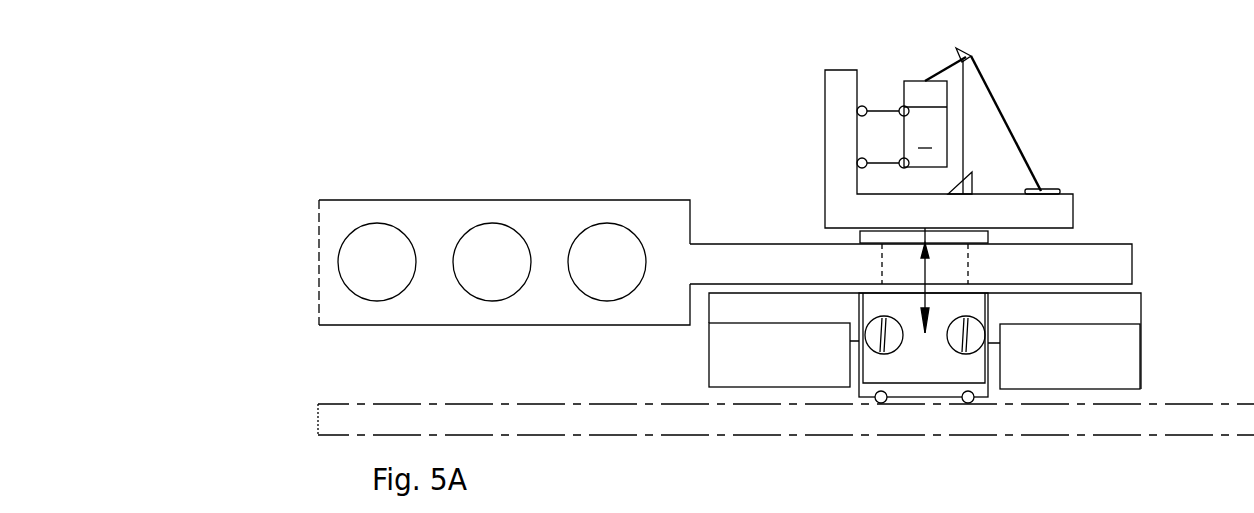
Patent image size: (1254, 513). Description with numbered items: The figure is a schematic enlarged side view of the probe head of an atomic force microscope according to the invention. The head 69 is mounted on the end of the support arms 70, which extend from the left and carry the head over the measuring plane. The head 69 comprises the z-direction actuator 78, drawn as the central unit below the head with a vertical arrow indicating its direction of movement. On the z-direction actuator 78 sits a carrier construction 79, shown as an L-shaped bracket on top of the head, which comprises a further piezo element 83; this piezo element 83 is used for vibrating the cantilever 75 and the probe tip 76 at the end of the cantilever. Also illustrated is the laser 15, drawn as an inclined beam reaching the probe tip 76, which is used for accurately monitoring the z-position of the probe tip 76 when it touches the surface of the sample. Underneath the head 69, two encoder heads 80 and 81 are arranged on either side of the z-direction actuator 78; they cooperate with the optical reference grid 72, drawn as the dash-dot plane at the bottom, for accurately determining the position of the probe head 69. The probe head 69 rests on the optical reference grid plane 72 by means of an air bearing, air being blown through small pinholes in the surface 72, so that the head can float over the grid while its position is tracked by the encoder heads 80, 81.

The laser 15 is at (1005, 126).
The head 69 is at (1133, 266).
The support arms 70 is at (492, 200).
The optical reference grid 72 is at (1222, 435).
The cantilever 75 is at (938, 70).
The probe tip 76 is at (971, 55).
The z-direction actuator 78 is at (941, 376).
The carrier construction 79 is at (825, 102).
The encoder head 80 is at (794, 364).
The encoder head 81 is at (1084, 364).
The further piezo element 83 is at (904, 86).